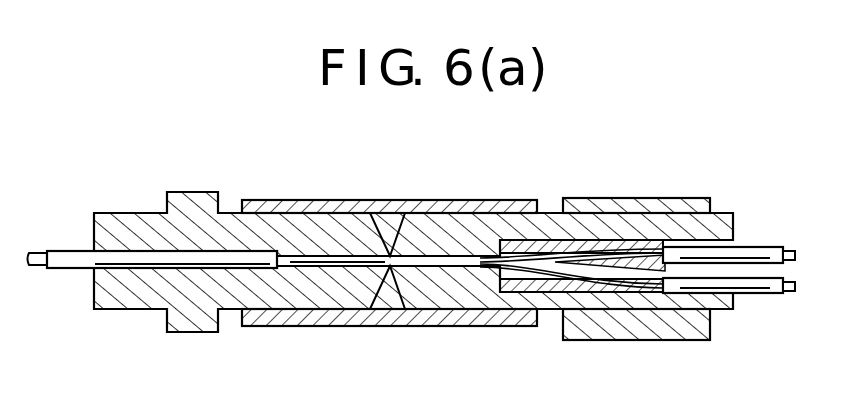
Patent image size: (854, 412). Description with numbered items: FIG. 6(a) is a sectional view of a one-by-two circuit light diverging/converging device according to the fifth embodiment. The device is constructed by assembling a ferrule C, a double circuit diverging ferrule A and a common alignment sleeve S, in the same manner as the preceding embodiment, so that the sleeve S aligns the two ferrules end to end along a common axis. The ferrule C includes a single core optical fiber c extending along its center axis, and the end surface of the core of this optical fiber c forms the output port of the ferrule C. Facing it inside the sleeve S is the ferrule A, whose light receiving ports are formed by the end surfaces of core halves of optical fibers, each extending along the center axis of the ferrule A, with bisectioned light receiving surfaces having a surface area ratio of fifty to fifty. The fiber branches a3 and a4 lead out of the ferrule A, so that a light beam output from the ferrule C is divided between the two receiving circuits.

The optical fiber c is at (67, 250).
The ferrule C is at (199, 191).
The common alignment sleeve S is at (434, 206).
The double circuit diverging ferrule A is at (633, 193).
The branch optical fiber a3 is at (764, 250).
The branch optical fiber a4 is at (760, 294).